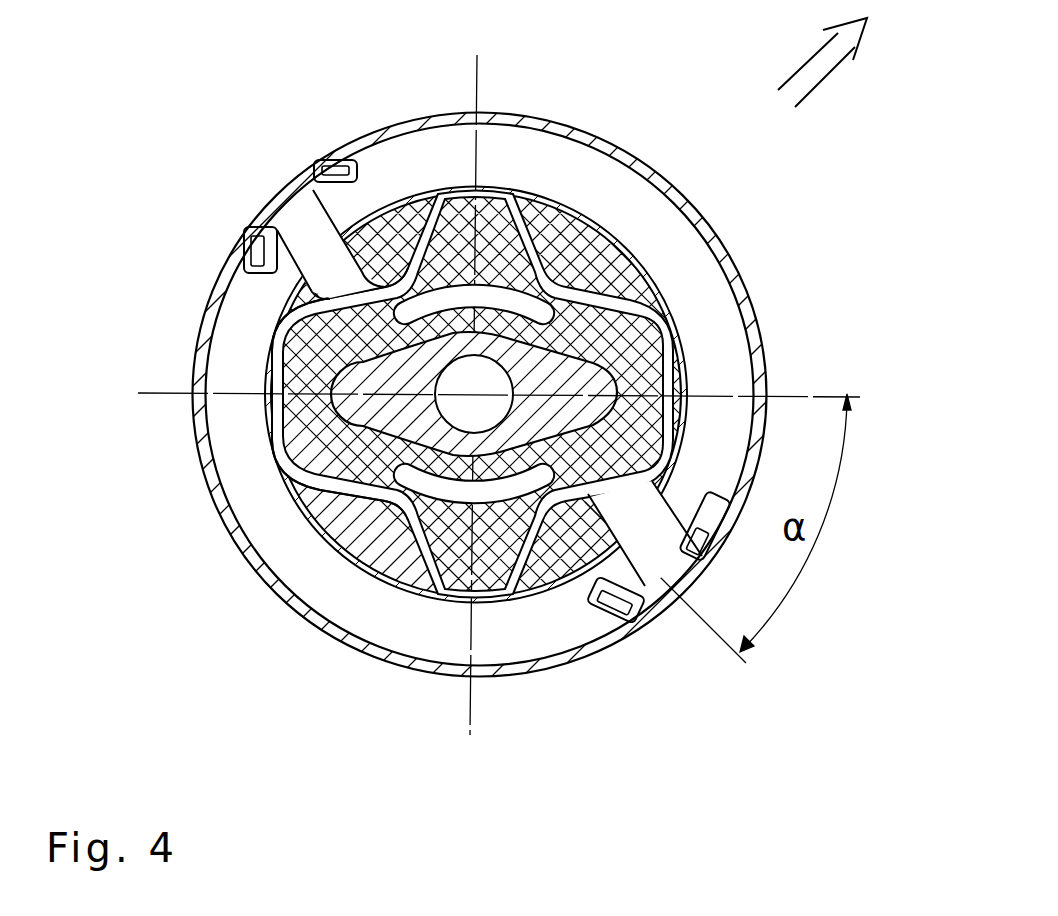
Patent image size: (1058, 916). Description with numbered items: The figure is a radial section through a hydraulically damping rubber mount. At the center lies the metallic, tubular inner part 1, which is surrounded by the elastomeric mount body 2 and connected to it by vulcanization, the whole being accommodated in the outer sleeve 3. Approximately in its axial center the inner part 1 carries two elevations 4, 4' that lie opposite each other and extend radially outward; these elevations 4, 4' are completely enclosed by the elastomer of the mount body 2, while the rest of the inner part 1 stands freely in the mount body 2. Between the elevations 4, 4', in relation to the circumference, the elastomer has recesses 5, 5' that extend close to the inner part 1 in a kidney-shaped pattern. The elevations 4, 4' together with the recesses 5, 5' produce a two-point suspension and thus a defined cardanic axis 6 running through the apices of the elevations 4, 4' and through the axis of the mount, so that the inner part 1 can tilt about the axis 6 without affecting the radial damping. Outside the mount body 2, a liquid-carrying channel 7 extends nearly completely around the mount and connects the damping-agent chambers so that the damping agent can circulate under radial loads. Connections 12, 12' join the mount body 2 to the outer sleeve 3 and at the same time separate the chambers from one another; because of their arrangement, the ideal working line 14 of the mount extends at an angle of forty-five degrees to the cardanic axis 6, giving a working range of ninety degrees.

The inner part 1 is at (427, 383).
The elastomeric mount body 2 is at (565, 241).
The outer sleeve 3 is at (757, 381).
The elevation 4 is at (551, 393).
The elevation 4' is at (293, 423).
The recess 5 is at (434, 592).
The recess 5' is at (575, 229).
The cardanic axis 6 is at (182, 400).
The liquid-carrying channel 7 is at (580, 635).
The connection 12 is at (644, 593).
The connection 12' is at (314, 184).
The ideal working line 14 is at (826, 80).